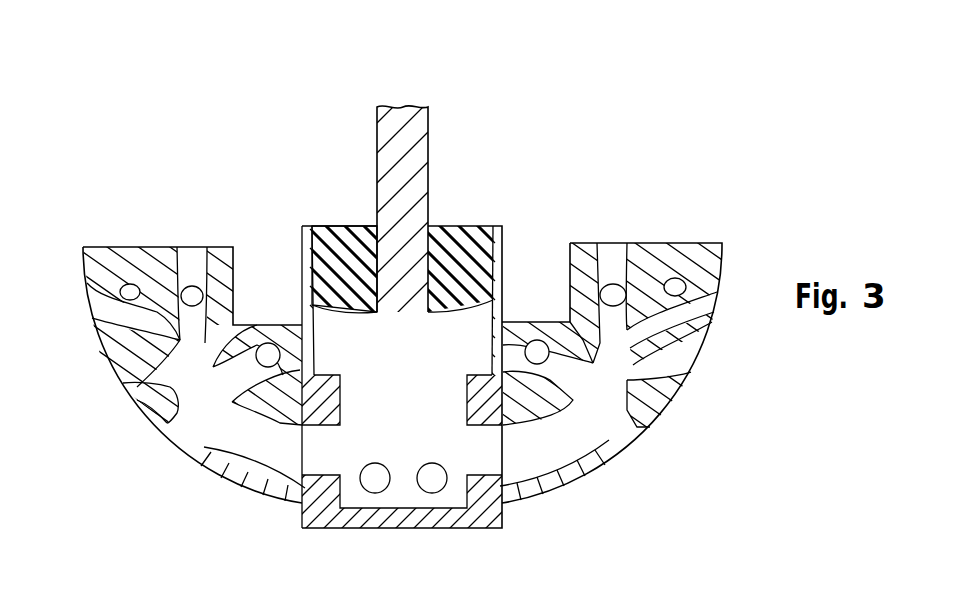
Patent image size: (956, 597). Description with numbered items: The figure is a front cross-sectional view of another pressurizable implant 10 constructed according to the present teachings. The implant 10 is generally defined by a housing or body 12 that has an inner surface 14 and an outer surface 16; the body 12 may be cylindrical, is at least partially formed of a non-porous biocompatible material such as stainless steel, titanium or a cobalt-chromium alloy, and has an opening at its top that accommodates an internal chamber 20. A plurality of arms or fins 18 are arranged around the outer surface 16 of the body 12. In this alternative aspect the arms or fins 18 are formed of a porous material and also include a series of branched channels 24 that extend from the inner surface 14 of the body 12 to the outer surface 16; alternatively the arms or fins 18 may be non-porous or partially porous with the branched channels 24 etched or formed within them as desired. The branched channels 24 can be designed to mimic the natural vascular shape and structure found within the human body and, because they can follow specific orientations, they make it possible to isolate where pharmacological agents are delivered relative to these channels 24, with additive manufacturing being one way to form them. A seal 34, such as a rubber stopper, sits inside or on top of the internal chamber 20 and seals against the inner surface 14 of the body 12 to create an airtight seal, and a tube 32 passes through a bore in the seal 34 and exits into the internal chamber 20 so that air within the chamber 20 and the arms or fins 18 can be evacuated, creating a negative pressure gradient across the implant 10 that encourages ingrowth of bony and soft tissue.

The pressurizable implant 10 is at (174, 152).
The body 12 is at (508, 250).
The inner surface 14 is at (333, 320).
The outer surface 16 is at (302, 278).
The arms or fins 18 is at (706, 240).
The internal chamber 20 is at (445, 330).
The branched channels 24 is at (690, 302).
The tube 32 is at (402, 118).
The seal 34 is at (366, 240).